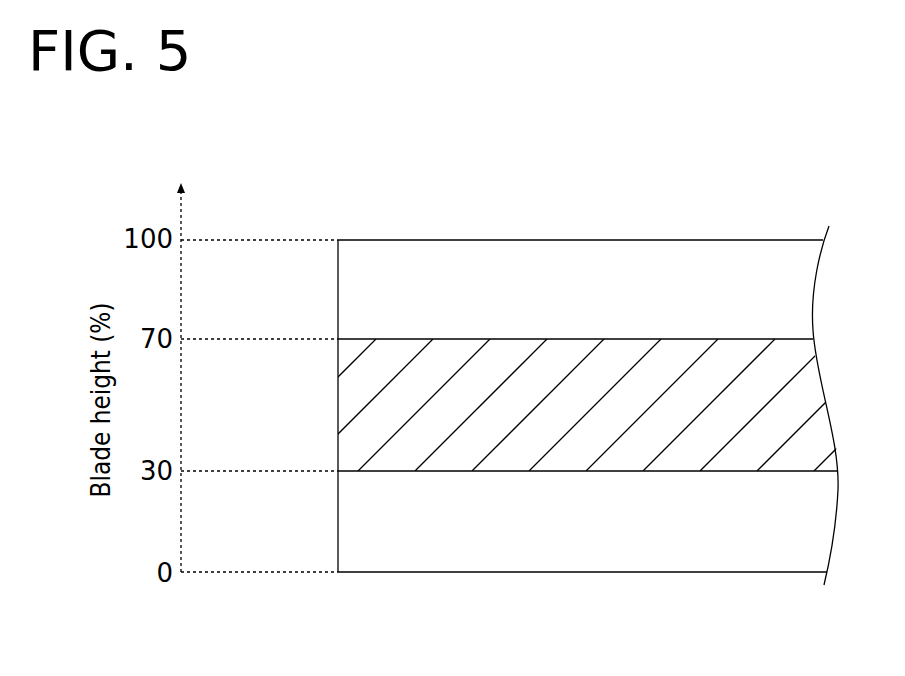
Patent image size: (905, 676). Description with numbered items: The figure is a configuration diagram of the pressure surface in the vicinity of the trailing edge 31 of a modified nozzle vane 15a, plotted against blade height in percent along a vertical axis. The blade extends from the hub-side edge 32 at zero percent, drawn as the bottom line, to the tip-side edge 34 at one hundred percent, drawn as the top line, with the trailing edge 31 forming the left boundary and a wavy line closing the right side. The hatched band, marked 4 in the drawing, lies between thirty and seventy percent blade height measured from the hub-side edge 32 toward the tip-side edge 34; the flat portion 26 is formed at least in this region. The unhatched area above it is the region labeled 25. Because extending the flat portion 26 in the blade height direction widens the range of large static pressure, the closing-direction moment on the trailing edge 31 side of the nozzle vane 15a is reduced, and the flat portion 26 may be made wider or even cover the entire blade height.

The nozzle vane 15a is at (358, 130).
The upper blade surface region 25 is at (528, 259).
The flat portion 26 is at (682, 355).
The trailing edge 31 is at (337, 402).
The hub-side edge 32 is at (586, 573).
The tip-side edge 34 is at (629, 240).
The coating region 4 is at (575, 416).